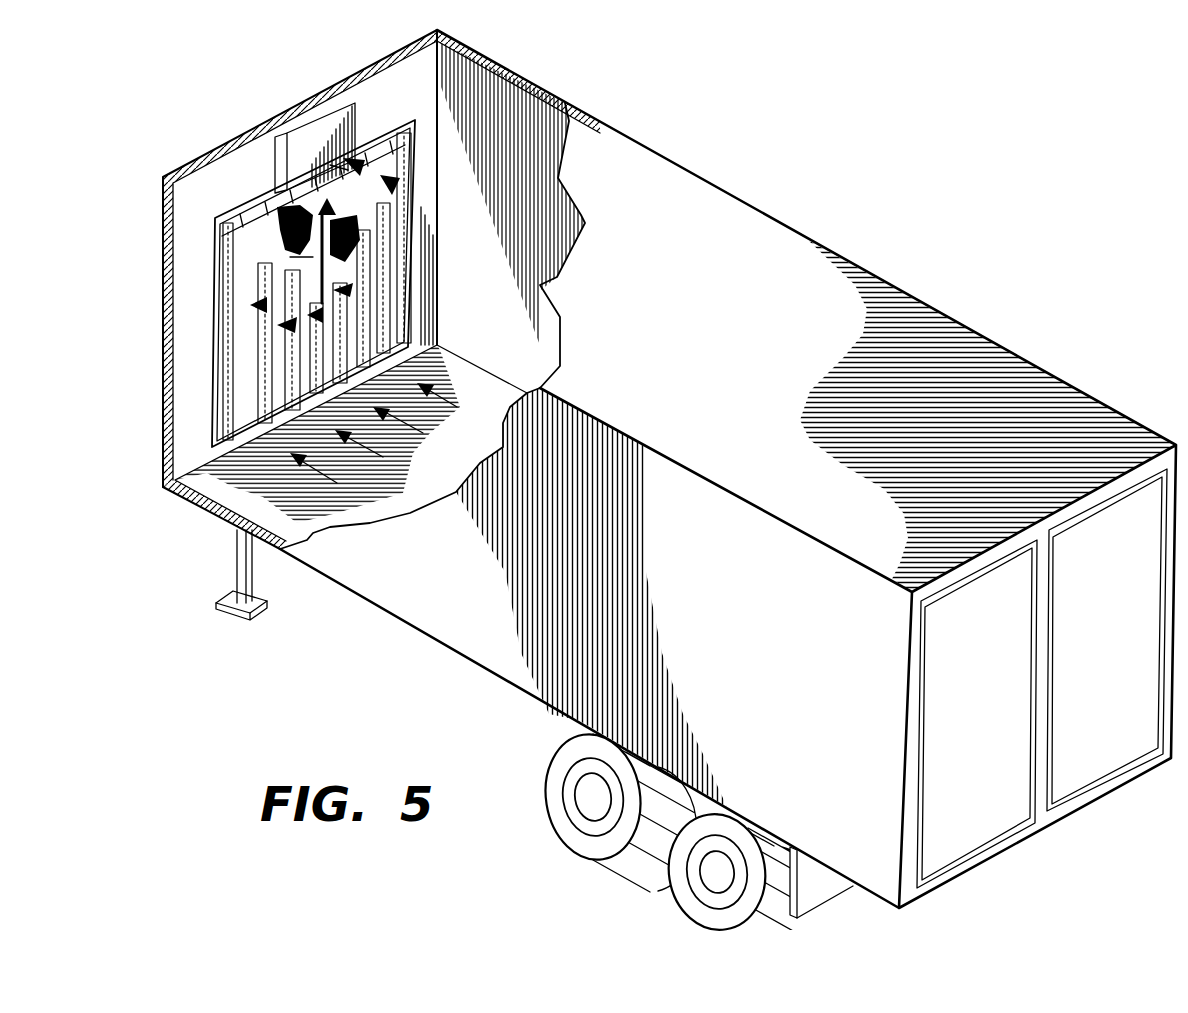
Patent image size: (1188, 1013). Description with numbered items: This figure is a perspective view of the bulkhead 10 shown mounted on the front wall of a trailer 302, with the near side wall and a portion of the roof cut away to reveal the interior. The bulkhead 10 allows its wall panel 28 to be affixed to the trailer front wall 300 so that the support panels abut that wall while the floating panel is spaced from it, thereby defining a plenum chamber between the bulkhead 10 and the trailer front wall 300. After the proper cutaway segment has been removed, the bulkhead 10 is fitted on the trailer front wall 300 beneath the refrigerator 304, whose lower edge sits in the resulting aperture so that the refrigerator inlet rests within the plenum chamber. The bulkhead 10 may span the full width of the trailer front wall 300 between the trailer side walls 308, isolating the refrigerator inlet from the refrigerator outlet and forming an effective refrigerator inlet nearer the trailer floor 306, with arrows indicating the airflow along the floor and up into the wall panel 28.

The bulkhead 10 is at (254, 245).
The wall panel 28 is at (243, 402).
The trailer front wall 300 is at (203, 321).
The trailer 302 is at (802, 184).
The refrigerator 304 is at (311, 143).
The trailer floor 306 is at (233, 488).
The trailer side walls 308 is at (517, 110).